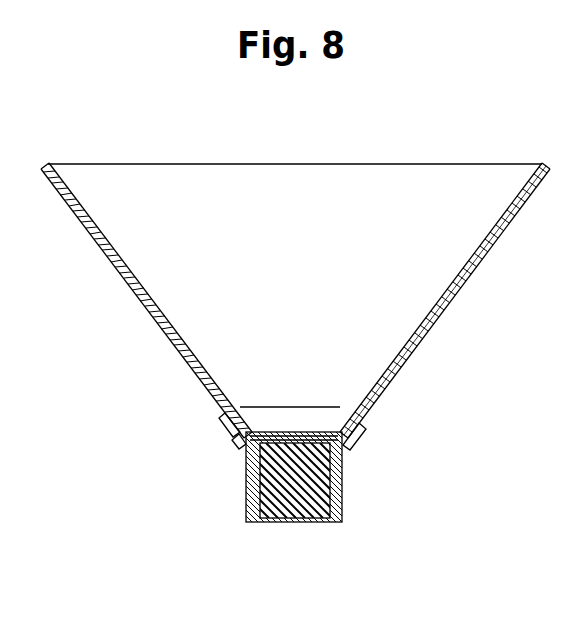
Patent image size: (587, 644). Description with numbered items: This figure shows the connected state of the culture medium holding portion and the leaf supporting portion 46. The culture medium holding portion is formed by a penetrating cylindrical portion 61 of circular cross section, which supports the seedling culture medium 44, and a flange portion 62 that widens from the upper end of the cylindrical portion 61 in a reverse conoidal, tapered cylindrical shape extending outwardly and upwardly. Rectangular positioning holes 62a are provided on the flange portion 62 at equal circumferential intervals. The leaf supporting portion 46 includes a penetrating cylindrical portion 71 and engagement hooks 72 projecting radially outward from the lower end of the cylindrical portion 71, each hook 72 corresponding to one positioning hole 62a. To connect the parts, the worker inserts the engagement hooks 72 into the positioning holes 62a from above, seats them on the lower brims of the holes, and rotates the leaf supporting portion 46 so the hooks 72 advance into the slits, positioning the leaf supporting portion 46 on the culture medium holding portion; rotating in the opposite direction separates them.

The leaf supporting portion 46 is at (309, 279).
The cylindrical portion 71 is at (492, 242).
The flange portion 62 is at (180, 420).
The positioning hole 62a is at (230, 437).
The cylindrical portion 61 is at (284, 519).
The seedling culture medium 44 is at (303, 525).
The engagement hook 72 is at (352, 446).